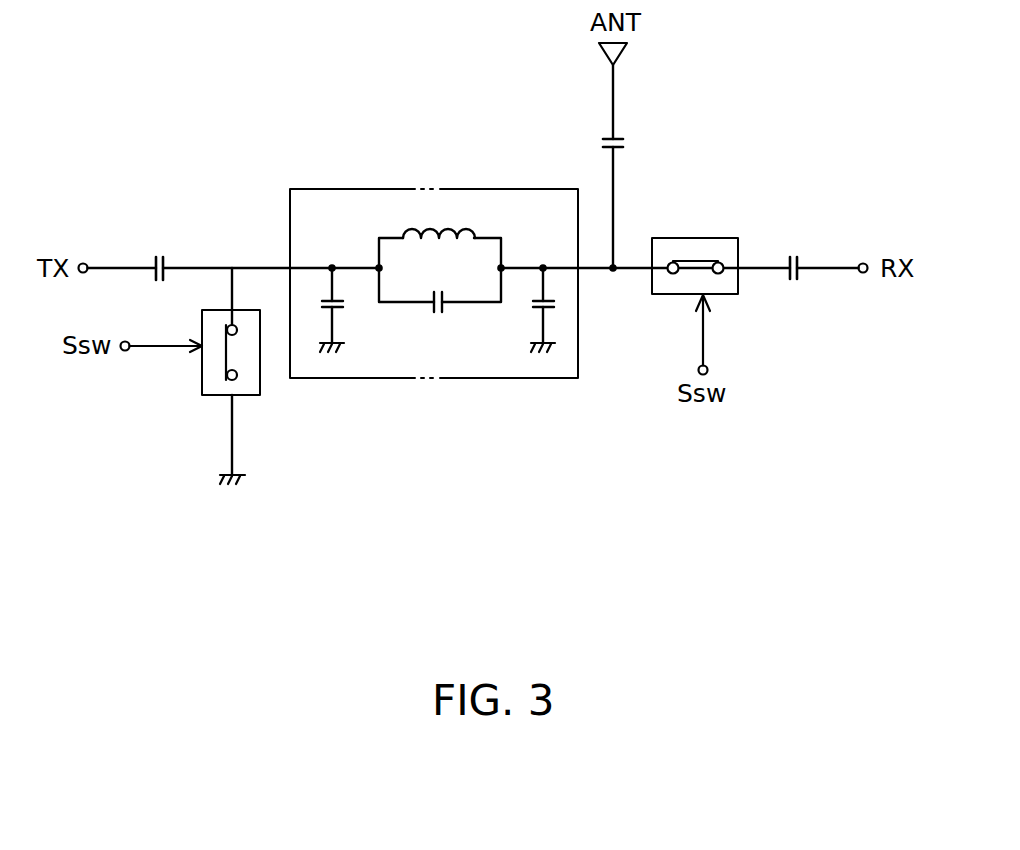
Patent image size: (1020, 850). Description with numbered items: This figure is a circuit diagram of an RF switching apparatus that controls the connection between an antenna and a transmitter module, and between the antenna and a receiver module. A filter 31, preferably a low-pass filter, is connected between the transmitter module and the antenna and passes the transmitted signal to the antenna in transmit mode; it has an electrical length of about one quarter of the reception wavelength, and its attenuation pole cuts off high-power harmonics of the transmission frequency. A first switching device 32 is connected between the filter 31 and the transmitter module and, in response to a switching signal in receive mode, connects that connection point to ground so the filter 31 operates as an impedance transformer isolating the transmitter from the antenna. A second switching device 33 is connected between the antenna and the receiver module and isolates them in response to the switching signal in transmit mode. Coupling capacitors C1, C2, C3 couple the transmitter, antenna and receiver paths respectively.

The filter 31 is at (370, 188).
The first switching device 32 is at (203, 366).
The second switching device 33 is at (700, 237).
The coupling capacitor C1 is at (159, 254).
The coupling capacitor C2 is at (634, 144).
The coupling capacitor C3 is at (796, 251).